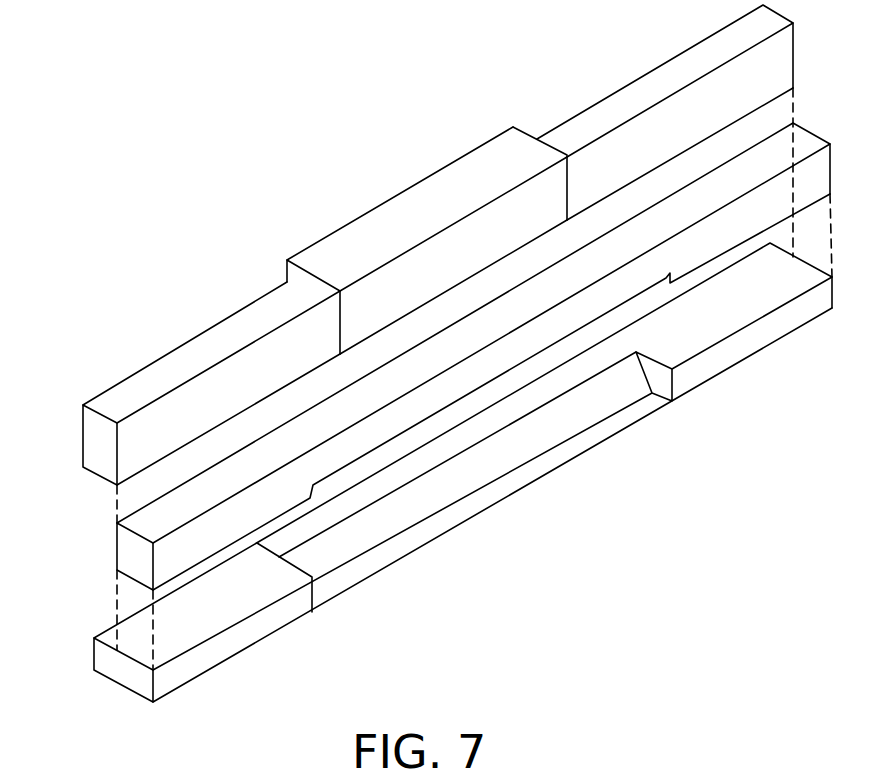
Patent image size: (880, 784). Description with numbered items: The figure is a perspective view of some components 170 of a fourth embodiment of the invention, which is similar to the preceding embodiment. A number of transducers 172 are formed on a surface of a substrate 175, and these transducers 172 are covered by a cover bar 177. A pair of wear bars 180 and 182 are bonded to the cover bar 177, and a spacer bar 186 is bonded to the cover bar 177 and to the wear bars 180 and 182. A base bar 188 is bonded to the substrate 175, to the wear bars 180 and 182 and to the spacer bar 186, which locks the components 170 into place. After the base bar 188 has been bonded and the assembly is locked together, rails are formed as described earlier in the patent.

The components 170 is at (723, 557).
The transducers 172 is at (441, 209).
The substrate 175 is at (341, 246).
The cover bar 177 is at (526, 171).
The wear bar 180 is at (206, 351).
The wear bar 182 is at (681, 62).
The spacer bar 186 is at (134, 557).
The base bar 188 is at (259, 637).